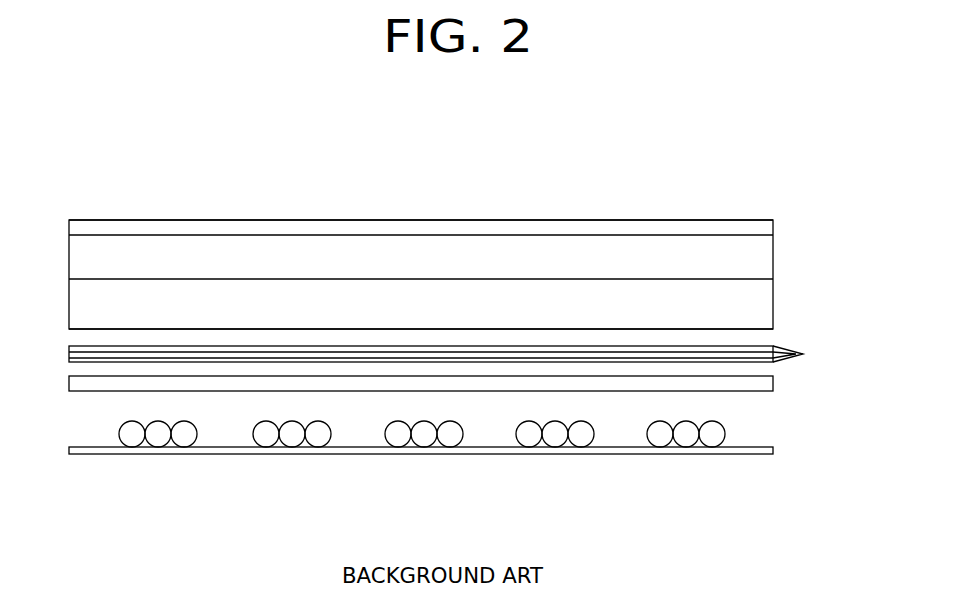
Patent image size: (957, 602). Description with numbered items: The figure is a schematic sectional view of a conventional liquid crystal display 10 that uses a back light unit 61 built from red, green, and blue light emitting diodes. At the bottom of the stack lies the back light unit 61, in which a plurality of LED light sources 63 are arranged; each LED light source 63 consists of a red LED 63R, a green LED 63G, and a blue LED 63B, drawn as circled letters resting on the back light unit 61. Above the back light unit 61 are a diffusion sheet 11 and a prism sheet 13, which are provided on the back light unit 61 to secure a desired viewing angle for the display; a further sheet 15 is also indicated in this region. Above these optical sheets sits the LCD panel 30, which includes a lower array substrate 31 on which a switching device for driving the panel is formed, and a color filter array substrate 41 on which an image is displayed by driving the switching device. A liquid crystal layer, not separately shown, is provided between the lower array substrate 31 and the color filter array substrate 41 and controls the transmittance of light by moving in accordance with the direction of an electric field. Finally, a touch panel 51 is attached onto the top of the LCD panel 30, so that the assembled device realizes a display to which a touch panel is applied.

The liquid crystal display device 10 is at (772, 200).
The LCD panel 30 is at (829, 247).
The touch panel 51 is at (770, 226).
The color filter array substrate 41 is at (768, 258).
The lower array substrate 31 is at (768, 306).
The prism sheet 13 is at (488, 494).
The diffusion sheet 11 is at (773, 383).
The lower polarizer 15 is at (388, 383).
The back light unit 61 is at (782, 390).
The LED light sources 63 is at (431, 486).
The red LED 63R is at (660, 447).
The green LED 63G is at (686, 447).
The blue LED 63B is at (635, 516).